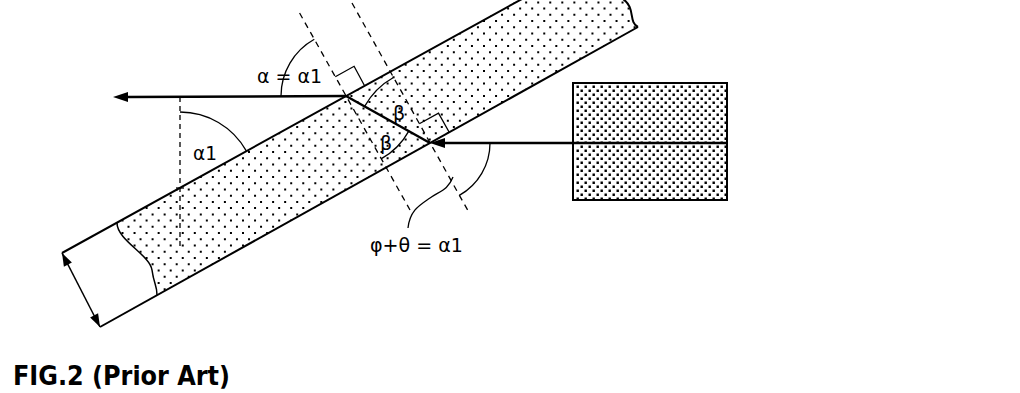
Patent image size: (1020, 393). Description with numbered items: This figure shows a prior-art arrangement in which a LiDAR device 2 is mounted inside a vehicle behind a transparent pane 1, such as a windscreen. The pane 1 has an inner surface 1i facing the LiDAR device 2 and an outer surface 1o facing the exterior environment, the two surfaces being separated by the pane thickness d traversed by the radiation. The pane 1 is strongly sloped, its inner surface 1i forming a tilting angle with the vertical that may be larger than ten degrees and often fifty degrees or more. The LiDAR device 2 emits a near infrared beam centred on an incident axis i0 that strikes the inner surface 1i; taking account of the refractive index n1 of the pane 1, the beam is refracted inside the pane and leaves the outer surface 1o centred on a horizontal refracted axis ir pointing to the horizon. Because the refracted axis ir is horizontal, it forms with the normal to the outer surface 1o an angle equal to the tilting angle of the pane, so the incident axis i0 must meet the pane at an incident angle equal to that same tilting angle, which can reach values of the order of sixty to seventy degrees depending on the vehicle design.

The transparent pane 1 is at (353, 163).
The outer surface of the pane 1o is at (130, 214).
The inner surface of the pane 1i is at (277, 229).
The LiDAR device 2 is at (687, 200).
The thickness of pane traversed by a radiation d is at (81, 290).
The refractive index of the transparent pane n1 is at (219, 200).
The incident axis i0 is at (512, 146).
The refracted axis ir is at (229, 85).